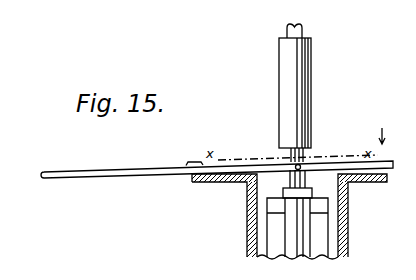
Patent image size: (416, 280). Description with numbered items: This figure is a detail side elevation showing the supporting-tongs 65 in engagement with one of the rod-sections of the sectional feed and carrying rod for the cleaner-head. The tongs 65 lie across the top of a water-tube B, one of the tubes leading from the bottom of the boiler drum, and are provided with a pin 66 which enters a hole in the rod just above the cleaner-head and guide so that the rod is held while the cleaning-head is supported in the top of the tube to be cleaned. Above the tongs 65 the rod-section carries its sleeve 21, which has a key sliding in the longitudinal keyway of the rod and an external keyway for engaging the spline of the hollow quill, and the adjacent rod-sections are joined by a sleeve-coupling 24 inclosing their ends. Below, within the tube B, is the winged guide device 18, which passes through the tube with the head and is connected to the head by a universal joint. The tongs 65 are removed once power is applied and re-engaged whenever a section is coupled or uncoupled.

The sleeve 21 is at (302, 30).
The sleeve-coupling 24 is at (299, 89).
The supporting-tongs 65 is at (160, 175).
The pin 66 is at (300, 164).
The winged guide device 18 is at (320, 222).
The water-tube B is at (349, 237).